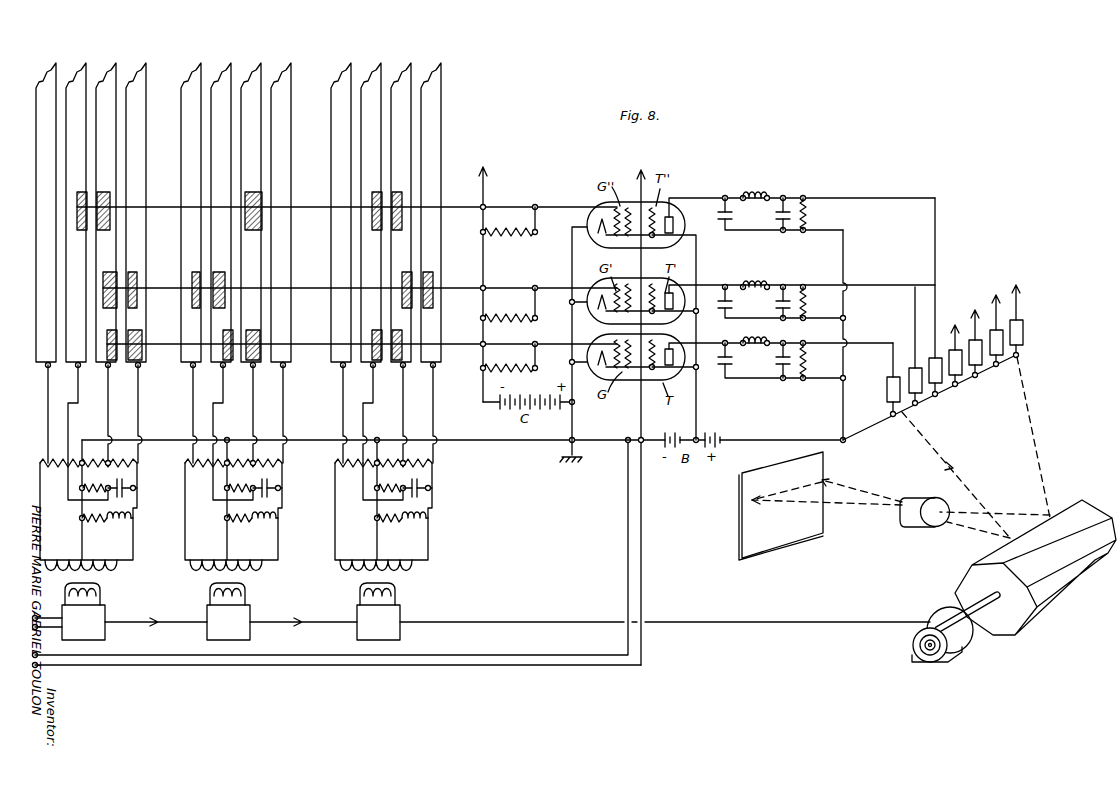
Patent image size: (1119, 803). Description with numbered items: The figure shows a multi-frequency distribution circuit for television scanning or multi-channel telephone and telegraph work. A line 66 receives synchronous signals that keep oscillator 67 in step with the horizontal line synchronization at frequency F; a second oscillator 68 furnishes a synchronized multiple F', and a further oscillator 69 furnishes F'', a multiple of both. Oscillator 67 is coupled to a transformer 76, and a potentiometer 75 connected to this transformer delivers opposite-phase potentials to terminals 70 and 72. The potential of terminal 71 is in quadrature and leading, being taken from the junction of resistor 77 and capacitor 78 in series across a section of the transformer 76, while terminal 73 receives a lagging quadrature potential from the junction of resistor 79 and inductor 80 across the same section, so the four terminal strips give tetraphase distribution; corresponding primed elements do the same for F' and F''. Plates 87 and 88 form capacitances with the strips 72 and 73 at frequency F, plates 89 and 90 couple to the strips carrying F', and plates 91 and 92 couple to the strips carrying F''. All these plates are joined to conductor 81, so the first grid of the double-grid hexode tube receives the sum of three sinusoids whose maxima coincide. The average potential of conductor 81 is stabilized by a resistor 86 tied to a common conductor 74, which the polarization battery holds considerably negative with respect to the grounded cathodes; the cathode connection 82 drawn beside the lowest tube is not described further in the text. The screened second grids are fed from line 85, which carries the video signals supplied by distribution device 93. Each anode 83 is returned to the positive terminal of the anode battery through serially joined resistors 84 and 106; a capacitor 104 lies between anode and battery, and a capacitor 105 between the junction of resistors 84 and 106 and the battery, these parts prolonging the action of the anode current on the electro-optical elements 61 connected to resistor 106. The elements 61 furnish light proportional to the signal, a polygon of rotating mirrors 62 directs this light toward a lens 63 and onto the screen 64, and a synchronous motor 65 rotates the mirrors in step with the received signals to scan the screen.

The terminal 70 is at (196, 215).
The terminal 71 is at (226, 215).
The terminal strip 72 is at (256, 215).
The terminal strip 73 is at (286, 215).
The plate 87 is at (77, 200).
The plate 88 is at (110, 195).
The plate 89 is at (262, 198).
The plate 90 is at (225, 305).
The plate 91 is at (372, 212).
The plate 92 is at (402, 200).
The common conductor 74 is at (484, 275).
The line 85 is at (641, 413).
The cathode lead 82 is at (570, 364).
The conductor 81 is at (347, 267).
The anode 83 is at (802, 262).
The resistor 86 is at (509, 289).
The resistor 84 is at (756, 260).
The capacitor 104 is at (722, 226).
The capacitor 105 is at (769, 288).
The resistor 106 is at (806, 212).
The potentiometer 75 is at (46, 463).
The transformer 76 is at (236, 582).
The resistor 77 is at (243, 480).
The capacitor 78 is at (270, 481).
The resistor 79 is at (241, 527).
The inductor 80 is at (268, 526).
The line 66 is at (48, 615).
The distribution device 93 is at (337, 553).
The oscillator 67 is at (83, 622).
The second oscillator 68 is at (228, 622).
The oscillator 69 is at (378, 622).
The electro-optical element 61 is at (965, 393).
The polygon of rotating mirrors 62 is at (966, 582).
The lens 63 is at (915, 526).
The screen 64 is at (741, 530).
The synchronous motor 65 is at (912, 646).